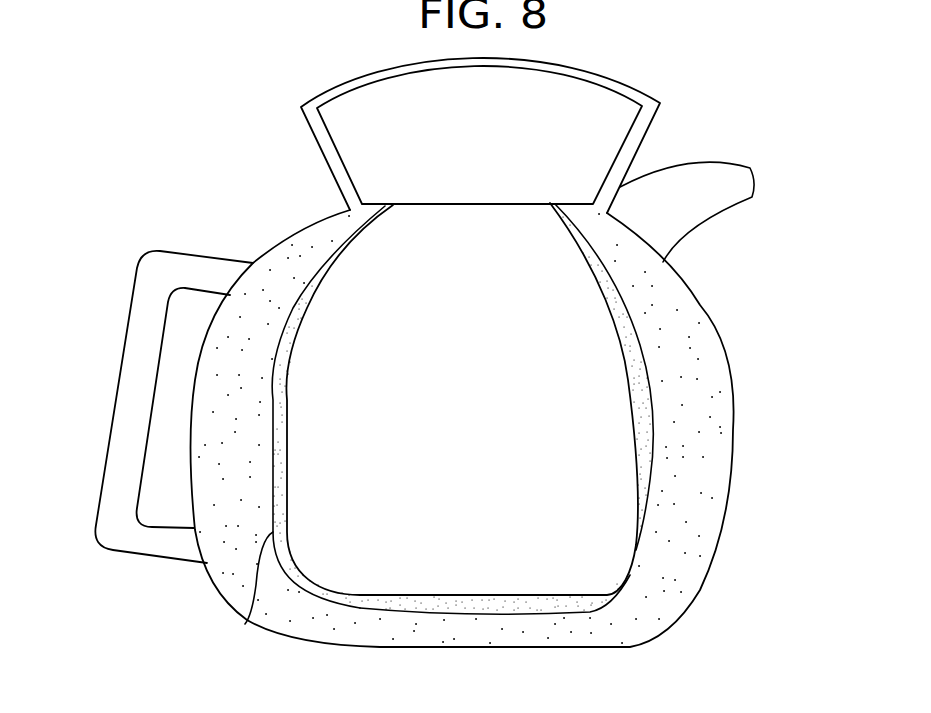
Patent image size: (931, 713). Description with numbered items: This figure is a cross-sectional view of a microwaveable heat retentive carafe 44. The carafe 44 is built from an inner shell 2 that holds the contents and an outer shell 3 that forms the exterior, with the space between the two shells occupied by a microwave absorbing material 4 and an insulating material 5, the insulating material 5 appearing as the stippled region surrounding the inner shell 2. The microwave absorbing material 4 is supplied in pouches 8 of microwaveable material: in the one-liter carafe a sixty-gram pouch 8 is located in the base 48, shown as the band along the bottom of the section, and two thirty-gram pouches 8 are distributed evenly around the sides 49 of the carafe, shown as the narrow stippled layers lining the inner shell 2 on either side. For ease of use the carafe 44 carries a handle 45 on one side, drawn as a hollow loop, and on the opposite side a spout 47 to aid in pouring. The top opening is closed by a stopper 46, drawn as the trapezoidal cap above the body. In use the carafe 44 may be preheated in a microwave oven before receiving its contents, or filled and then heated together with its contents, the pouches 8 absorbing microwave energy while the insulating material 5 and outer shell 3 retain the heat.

The inner shell 2 is at (633, 400).
The outer shell 3 is at (733, 463).
The microwave absorbing material 4 is at (643, 482).
The insulating material 5 is at (707, 402).
The pouch of microwaveable material 8 is at (653, 348).
The microwaveable heat retentive carafe 44 is at (113, 269).
The handle 45 is at (148, 545).
The stopper 46 is at (362, 142).
The spout 47 is at (695, 177).
The base 48 is at (490, 615).
The sides 49 is at (247, 622).